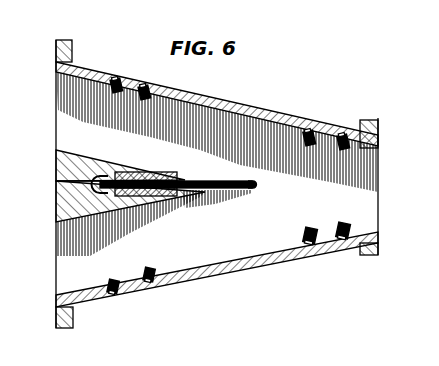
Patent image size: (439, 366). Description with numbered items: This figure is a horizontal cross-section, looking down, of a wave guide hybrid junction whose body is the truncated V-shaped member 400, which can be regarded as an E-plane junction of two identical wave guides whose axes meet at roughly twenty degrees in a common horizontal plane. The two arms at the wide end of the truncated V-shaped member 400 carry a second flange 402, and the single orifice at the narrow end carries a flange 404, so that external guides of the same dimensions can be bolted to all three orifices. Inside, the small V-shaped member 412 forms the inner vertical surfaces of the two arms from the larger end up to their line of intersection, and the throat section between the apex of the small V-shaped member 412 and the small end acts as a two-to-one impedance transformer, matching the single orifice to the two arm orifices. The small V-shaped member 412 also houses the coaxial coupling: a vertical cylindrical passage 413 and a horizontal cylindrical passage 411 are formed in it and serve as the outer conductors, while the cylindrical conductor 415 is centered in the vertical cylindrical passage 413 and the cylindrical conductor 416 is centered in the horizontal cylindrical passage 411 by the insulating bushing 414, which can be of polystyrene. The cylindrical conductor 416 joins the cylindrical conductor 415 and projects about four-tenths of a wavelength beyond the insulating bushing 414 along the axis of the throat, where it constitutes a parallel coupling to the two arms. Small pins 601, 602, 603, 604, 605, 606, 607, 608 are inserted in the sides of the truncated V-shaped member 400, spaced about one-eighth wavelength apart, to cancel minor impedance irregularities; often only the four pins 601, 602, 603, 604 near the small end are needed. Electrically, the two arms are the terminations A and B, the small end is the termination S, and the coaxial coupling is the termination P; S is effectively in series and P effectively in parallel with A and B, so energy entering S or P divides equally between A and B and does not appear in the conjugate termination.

The truncated V-shaped member 400 is at (203, 99).
The second flange 402 is at (63, 41).
The flange 404 is at (367, 119).
The horizontal cylindrical passage 411 is at (181, 181).
The small V-shaped member 412 is at (69, 153).
The vertical cylindrical passage 413 is at (56, 181).
The insulating bushing 414 is at (150, 195).
The cylindrical conductor 415 is at (101, 178).
The cylindrical conductor 416 is at (254, 186).
The small pin 601 is at (341, 134).
The small pin 602 is at (306, 129).
The small pin 603 is at (303, 244).
The small pin 604 is at (343, 240).
The small pin 605 is at (141, 86).
The small pin 606 is at (113, 78).
The small pin 607 is at (150, 283).
The small pin 608 is at (111, 294).
The termination A is at (56, 263).
The termination B is at (56, 105).
The termination P is at (230, 181).
The termination S is at (378, 192).